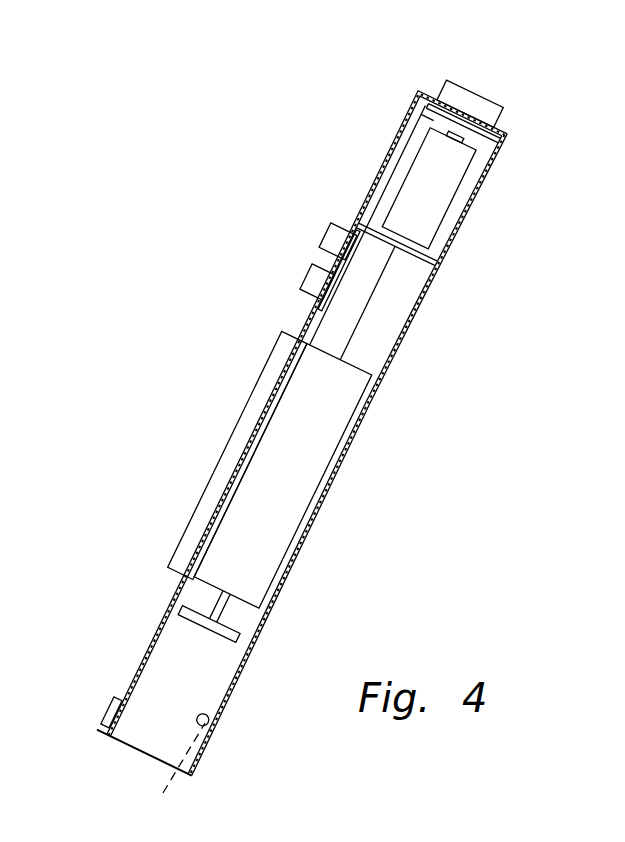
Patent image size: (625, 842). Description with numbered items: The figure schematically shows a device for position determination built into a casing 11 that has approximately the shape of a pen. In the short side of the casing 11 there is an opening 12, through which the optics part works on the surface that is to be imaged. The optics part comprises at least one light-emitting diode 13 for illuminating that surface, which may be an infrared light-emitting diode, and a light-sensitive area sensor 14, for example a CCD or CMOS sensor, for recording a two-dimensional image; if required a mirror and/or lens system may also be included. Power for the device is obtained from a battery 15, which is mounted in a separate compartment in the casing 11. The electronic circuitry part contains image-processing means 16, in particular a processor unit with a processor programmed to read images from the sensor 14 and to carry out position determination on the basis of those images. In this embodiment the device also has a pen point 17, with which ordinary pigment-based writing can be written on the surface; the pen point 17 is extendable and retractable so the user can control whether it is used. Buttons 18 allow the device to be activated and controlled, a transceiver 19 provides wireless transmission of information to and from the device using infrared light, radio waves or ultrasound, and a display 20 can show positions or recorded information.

The casing 11 is at (373, 401).
The opening 12 is at (142, 752).
The light-emitting diode 13 is at (213, 726).
The light-sensitive area sensor 14 is at (250, 630).
The battery 15 is at (427, 197).
The image-processing means 16 is at (283, 506).
The pen point 17 is at (106, 712).
The buttons 18 is at (307, 283).
The transceiver 19 is at (470, 97).
The display 20 is at (235, 440).